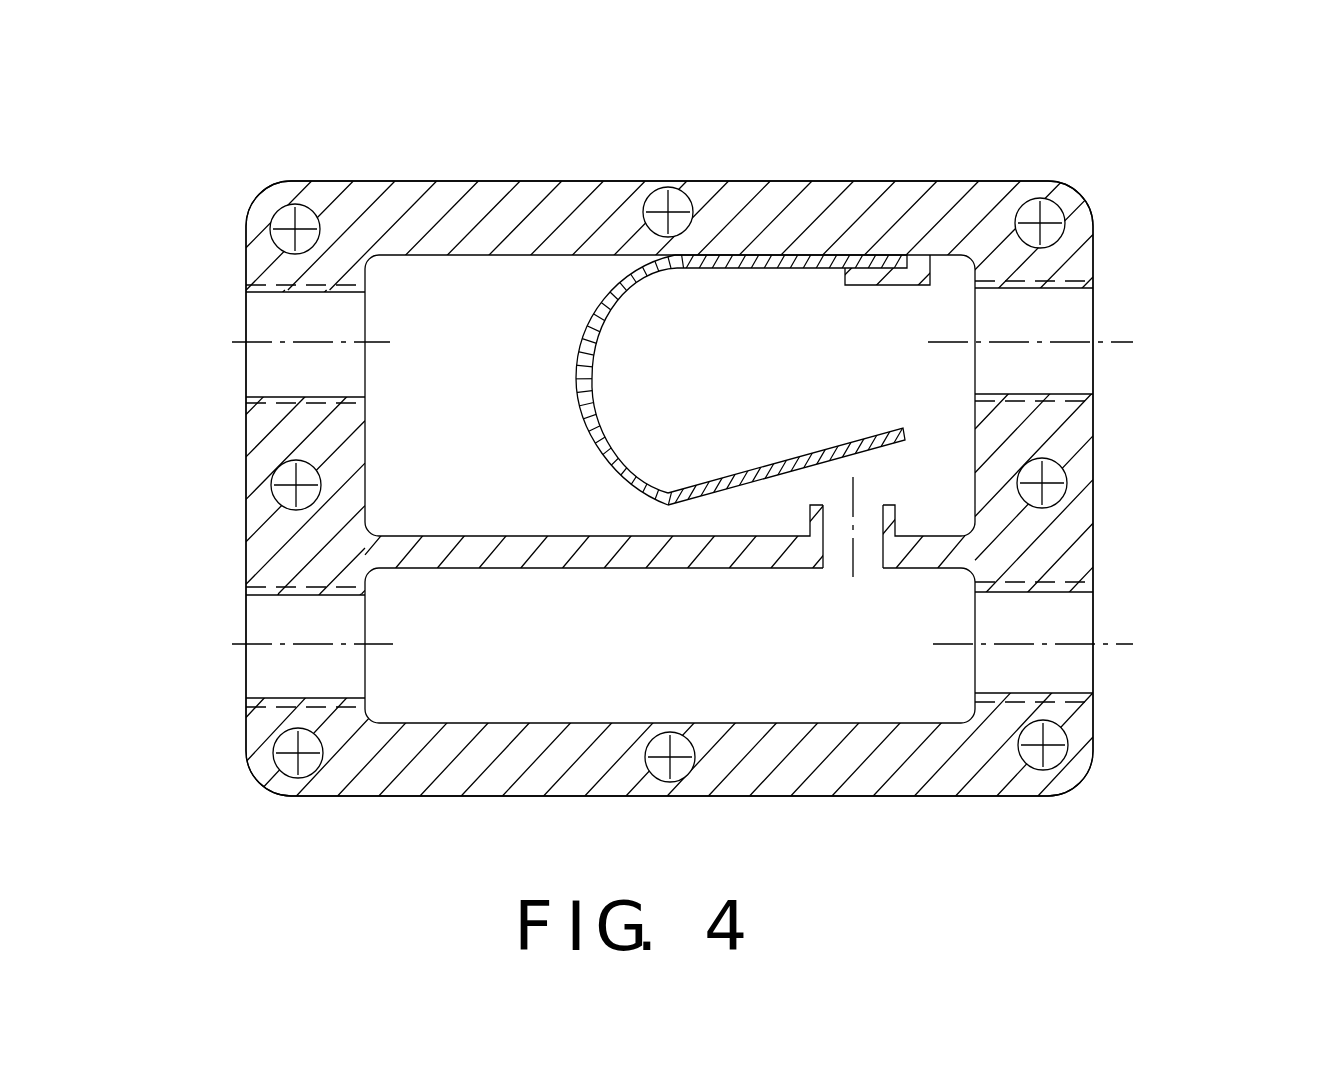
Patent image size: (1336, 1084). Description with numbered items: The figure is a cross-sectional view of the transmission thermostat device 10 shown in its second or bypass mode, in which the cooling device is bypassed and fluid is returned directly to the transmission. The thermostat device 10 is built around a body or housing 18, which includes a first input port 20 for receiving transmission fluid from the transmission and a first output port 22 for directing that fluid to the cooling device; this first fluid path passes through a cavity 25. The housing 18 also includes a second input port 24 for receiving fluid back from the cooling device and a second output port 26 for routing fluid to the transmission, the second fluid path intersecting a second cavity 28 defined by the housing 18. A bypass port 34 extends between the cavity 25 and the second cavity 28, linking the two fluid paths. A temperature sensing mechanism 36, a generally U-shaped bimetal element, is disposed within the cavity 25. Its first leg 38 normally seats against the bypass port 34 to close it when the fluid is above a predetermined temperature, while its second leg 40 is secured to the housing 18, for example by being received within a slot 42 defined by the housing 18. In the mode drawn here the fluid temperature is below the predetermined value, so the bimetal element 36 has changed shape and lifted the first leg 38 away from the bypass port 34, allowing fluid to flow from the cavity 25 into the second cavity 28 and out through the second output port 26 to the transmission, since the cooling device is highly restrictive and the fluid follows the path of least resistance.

The thermostat device 10 is at (1157, 178).
The housing 18 is at (1095, 463).
The first input port 20 is at (1067, 390).
The first output port 22 is at (302, 395).
The second input port 24 is at (302, 693).
The second output port 26 is at (1063, 688).
The cavity 25 is at (481, 456).
The second cavity 28 is at (803, 653).
The bypass port 34 is at (860, 565).
The temperature sensing mechanism 36 is at (625, 387).
The first leg 38 is at (815, 450).
The second leg 40 is at (781, 270).
The slot 42 is at (880, 270).